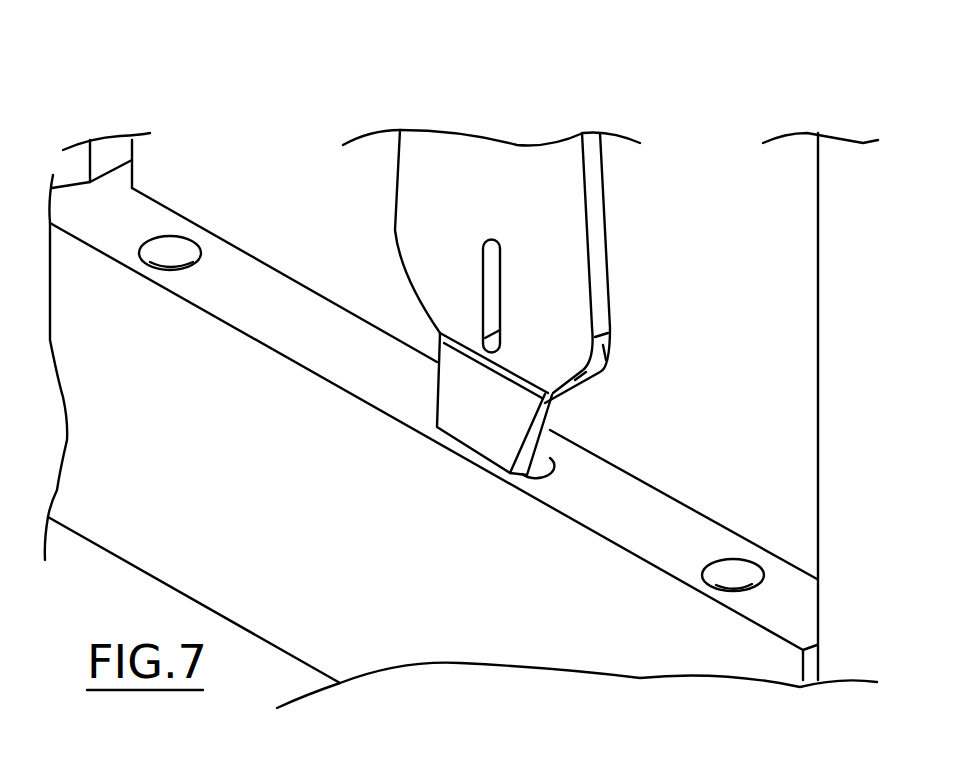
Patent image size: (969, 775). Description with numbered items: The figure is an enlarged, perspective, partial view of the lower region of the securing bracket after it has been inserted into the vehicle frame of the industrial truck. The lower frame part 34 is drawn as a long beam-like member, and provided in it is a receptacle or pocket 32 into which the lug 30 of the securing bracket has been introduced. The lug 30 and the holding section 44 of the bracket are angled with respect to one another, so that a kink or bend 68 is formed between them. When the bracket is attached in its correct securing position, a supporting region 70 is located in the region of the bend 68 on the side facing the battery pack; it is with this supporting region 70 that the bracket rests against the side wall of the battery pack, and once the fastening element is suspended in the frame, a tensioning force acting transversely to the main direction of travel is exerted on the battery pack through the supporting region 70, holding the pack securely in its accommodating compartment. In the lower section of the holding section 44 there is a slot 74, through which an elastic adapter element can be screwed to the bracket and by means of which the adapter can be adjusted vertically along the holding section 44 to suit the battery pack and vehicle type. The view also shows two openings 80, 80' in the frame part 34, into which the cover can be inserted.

The lug 30 is at (462, 398).
The receptacle or pocket 32 is at (540, 463).
The lower frame part 34 is at (483, 562).
The holding section 44 is at (560, 208).
The bend 68 is at (618, 381).
The supporting region 70 is at (605, 372).
The slot 74 is at (488, 285).
The opening 80 is at (190, 211).
The opening 80' is at (749, 535).